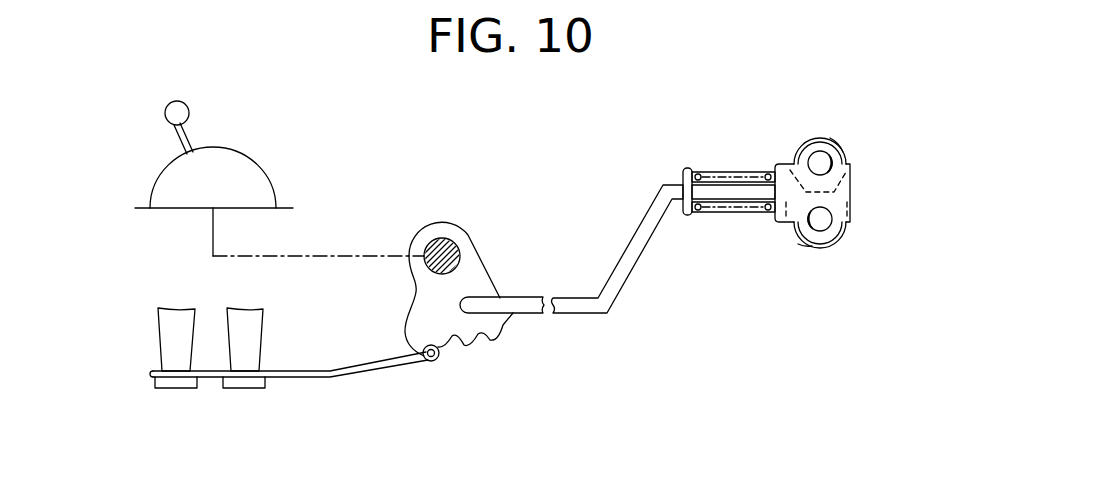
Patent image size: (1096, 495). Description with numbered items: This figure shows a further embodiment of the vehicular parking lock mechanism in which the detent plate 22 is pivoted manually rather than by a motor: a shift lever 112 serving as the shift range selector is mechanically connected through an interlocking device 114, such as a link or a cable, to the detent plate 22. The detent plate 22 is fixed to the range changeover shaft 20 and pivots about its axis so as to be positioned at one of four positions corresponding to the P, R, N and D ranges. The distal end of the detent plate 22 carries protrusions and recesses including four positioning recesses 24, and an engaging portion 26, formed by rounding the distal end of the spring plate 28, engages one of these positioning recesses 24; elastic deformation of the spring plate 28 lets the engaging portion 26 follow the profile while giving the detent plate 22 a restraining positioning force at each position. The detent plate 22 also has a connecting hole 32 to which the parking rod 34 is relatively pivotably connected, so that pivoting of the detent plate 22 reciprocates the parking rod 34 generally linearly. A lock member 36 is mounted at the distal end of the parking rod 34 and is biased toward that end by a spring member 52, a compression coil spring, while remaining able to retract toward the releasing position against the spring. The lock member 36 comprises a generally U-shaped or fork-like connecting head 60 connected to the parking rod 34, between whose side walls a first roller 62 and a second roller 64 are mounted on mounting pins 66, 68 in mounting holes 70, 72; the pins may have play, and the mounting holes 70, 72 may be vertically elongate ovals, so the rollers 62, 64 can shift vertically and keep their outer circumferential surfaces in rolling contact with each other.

The shift lever 112 is at (186, 103).
The interlocking device 114 is at (343, 254).
The range changeover shaft 20 is at (441, 250).
The detent plate 22 is at (483, 270).
The positioning recesses 24 is at (502, 328).
The engaging portion 26 is at (433, 362).
The spring plate 28 is at (302, 378).
The connecting hole 32 is at (462, 300).
The parking rod 34 is at (625, 262).
The lock member 36 is at (803, 130).
The spring member 52 is at (688, 168).
The connecting head 60 is at (773, 212).
The first roller 62 is at (842, 240).
The second roller 64 is at (795, 142).
The mounting pin 66 is at (845, 207).
The mounting pin 68 is at (845, 178).
The mounting hole 70 is at (798, 244).
The mounting hole 72 is at (838, 140).